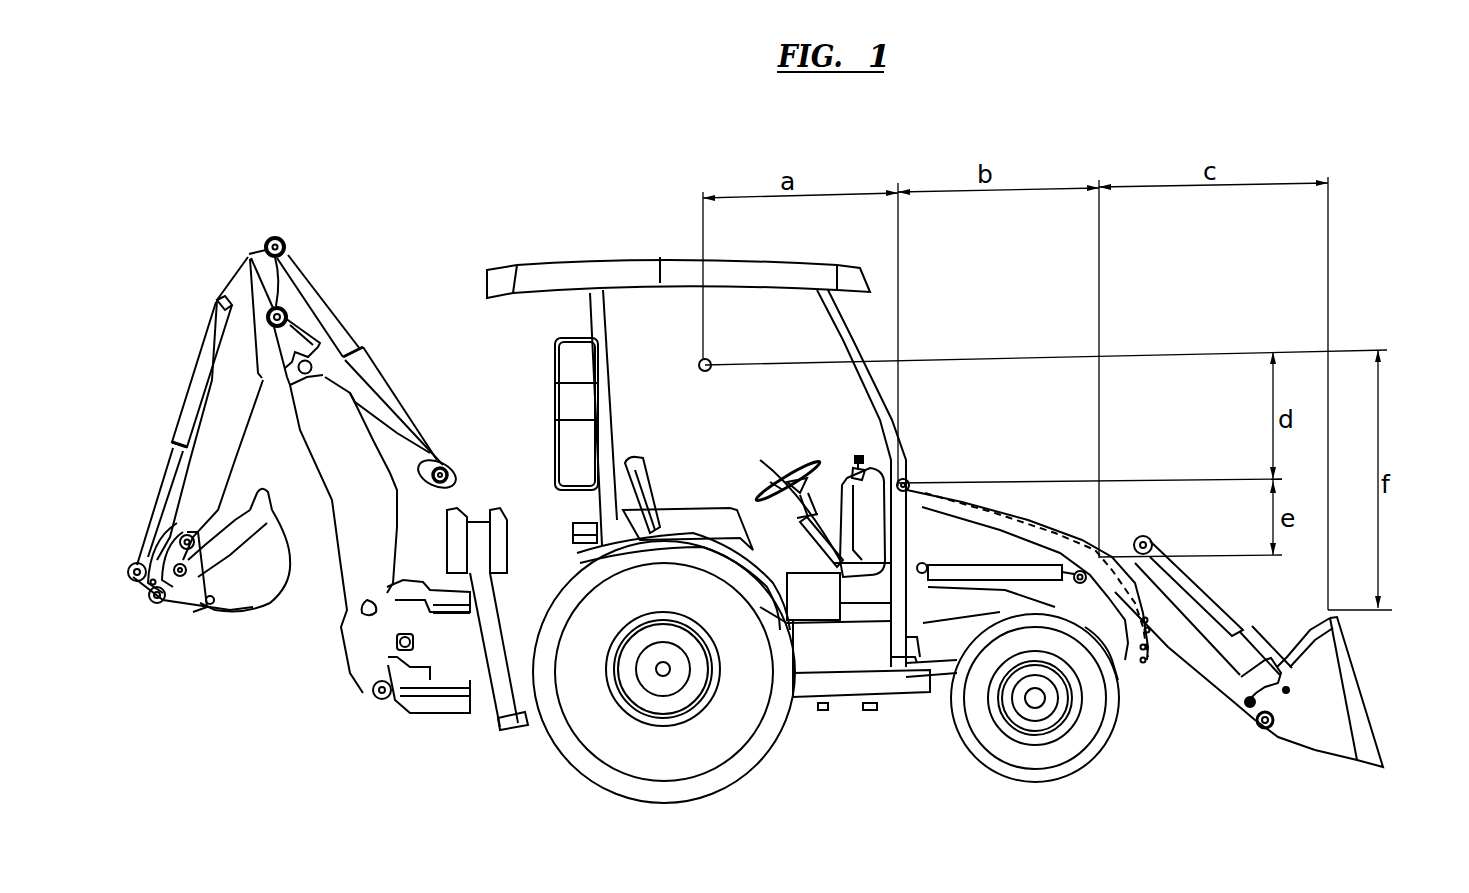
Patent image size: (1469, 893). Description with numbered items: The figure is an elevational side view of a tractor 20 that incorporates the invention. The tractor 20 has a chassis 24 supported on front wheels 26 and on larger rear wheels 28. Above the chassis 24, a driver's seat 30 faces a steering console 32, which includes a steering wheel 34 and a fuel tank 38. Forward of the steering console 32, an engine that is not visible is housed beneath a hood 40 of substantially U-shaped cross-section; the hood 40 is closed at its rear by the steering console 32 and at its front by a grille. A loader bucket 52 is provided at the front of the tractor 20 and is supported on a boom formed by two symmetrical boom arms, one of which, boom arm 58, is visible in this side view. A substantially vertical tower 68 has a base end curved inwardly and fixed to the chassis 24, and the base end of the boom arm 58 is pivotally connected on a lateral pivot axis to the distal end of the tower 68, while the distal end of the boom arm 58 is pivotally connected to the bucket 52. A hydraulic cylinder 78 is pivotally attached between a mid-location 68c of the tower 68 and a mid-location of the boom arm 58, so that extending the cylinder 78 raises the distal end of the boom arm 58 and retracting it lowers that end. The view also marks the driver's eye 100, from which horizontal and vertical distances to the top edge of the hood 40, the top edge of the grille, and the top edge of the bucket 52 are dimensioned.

The tractor 20 is at (1345, 280).
The chassis 24 is at (853, 715).
The front wheels 26 is at (1087, 760).
The rear wheels 28 is at (567, 765).
The driver's seat 30 is at (657, 493).
The steering console 32 is at (830, 453).
The steering wheel 34 is at (773, 480).
The fuel tank 38 is at (855, 452).
The hood 40 is at (975, 500).
The loader bucket 52 is at (1372, 673).
The boom arm 58 is at (1090, 537).
The tower 68 is at (942, 483).
The mid-location of tower 68c is at (920, 637).
The hydraulic cylinder 78 is at (997, 560).
The driver's eye 100 is at (699, 364).